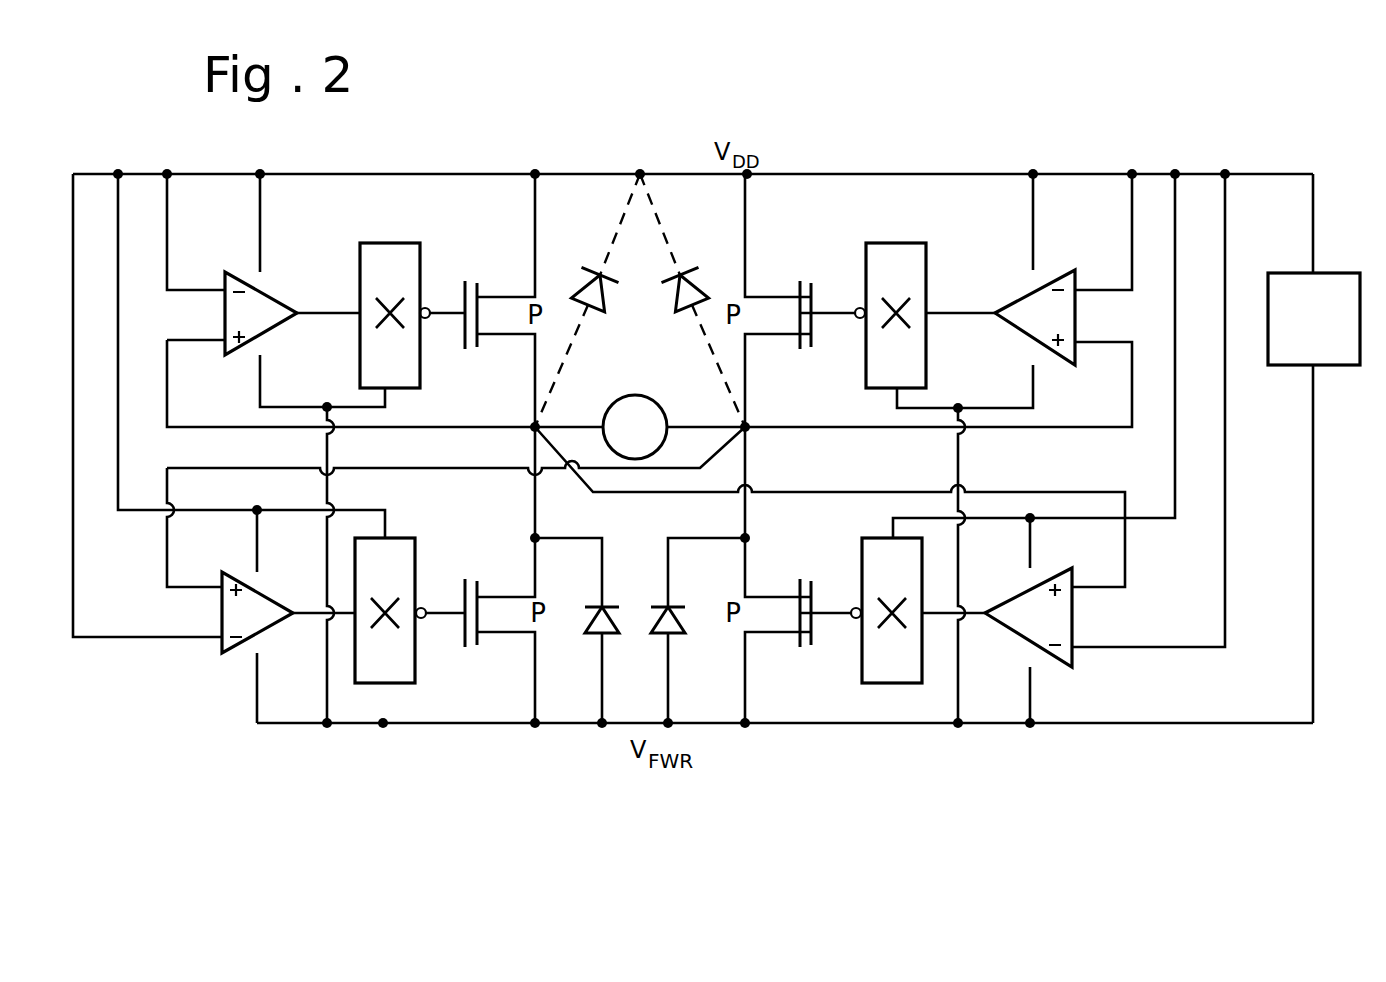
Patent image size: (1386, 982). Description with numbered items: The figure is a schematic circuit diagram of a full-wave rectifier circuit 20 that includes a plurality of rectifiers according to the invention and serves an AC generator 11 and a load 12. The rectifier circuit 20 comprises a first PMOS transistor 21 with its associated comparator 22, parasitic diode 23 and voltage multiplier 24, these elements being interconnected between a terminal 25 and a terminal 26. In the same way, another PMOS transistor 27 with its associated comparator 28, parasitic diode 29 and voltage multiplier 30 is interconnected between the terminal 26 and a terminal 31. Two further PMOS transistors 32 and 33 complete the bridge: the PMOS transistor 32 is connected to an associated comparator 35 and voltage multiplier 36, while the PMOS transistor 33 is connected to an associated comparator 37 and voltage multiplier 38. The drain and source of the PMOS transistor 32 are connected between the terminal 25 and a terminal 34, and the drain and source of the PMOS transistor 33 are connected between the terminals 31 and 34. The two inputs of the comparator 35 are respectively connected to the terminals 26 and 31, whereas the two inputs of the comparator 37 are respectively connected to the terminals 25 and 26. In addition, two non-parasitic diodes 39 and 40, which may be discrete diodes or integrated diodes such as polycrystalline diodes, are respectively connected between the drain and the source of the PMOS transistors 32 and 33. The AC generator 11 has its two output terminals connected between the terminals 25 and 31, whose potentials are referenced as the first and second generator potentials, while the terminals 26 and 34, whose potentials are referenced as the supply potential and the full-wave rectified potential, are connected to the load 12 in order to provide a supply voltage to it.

The AC generator 11 is at (650, 408).
The load 12 is at (1340, 285).
The rectifier circuit 20 is at (1192, 132).
The first PMOS transistor 21 is at (463, 297).
The comparator 22 is at (265, 310).
The parasitic diode 23 is at (585, 288).
The voltage multiplier 24 is at (383, 257).
The terminal 25 is at (532, 427).
The terminal 26 is at (640, 170).
The PMOS transistor 27 is at (797, 297).
The comparator 28 is at (1058, 282).
The parasitic diode 29 is at (695, 288).
The voltage multiplier 30 is at (908, 283).
The terminal 31 is at (748, 427).
The PMOS transistor 32 is at (457, 598).
The PMOS transistor 33 is at (813, 598).
The terminal 34 is at (527, 726).
The comparator 35 is at (232, 650).
The voltage multiplier 36 is at (405, 575).
The comparator 37 is at (1065, 655).
The voltage multiplier 38 is at (876, 585).
The non-parasitic diode 39 is at (595, 640).
The non-parasitic diode 40 is at (680, 640).